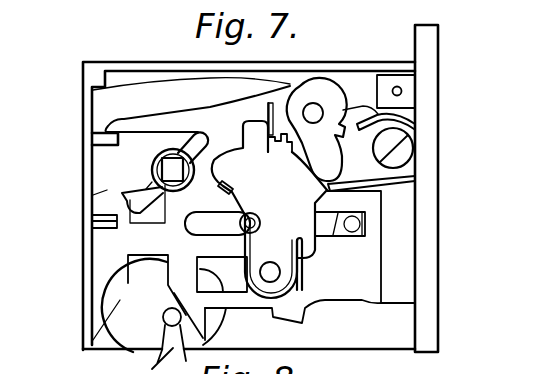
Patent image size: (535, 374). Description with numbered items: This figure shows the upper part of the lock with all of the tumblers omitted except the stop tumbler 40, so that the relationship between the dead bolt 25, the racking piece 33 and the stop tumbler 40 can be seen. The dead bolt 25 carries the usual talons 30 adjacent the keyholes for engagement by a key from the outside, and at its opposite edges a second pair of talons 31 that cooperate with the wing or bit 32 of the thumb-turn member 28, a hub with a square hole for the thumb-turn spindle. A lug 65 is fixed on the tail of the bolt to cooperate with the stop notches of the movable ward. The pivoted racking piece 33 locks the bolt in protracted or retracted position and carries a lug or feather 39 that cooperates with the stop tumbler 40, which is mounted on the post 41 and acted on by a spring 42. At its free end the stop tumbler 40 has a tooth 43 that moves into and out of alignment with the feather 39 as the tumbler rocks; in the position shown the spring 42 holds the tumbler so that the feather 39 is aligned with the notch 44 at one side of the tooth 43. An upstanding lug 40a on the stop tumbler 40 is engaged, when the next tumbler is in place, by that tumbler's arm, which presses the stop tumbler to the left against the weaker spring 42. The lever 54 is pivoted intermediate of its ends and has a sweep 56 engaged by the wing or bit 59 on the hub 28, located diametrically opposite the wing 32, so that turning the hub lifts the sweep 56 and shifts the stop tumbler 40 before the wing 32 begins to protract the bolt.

The dead bolt 25 is at (408, 293).
The thumb-turn member 28 is at (161, 170).
The talons 30 is at (107, 297).
The talons 31 is at (122, 193).
The wing or bit 32 is at (159, 191).
The racking piece 33 is at (392, 124).
The lug or feather 39 is at (270, 133).
The stop tumbler 40 is at (293, 203).
The upstanding lug 40a is at (231, 189).
The post 41 is at (280, 272).
The spring 42 is at (252, 244).
The tooth 43 is at (278, 147).
The notch 44 is at (278, 156).
The lever 54 is at (256, 102).
The sweep 56 is at (120, 122).
The wing or bit 59 is at (196, 147).
The lug 65 is at (95, 224).